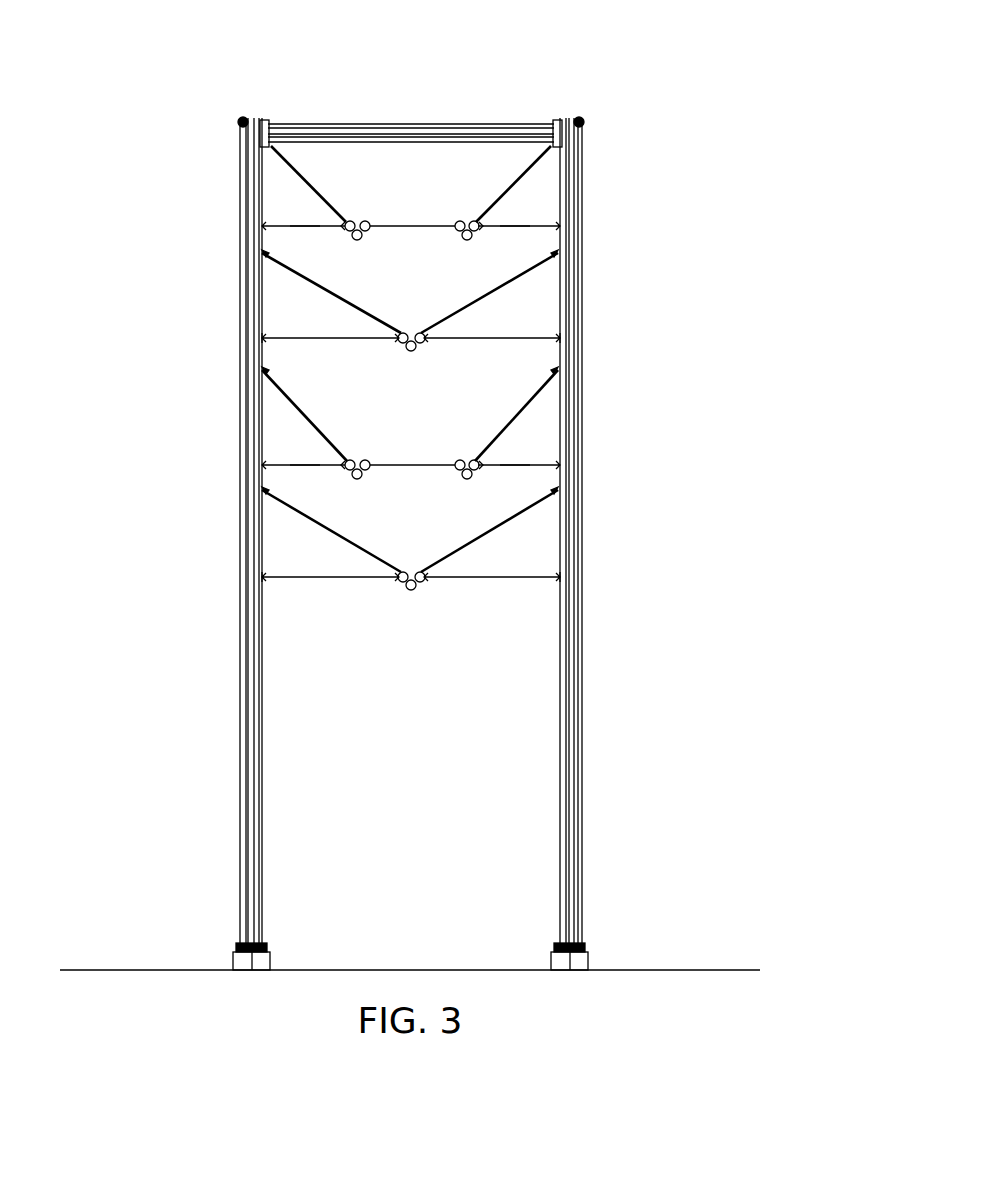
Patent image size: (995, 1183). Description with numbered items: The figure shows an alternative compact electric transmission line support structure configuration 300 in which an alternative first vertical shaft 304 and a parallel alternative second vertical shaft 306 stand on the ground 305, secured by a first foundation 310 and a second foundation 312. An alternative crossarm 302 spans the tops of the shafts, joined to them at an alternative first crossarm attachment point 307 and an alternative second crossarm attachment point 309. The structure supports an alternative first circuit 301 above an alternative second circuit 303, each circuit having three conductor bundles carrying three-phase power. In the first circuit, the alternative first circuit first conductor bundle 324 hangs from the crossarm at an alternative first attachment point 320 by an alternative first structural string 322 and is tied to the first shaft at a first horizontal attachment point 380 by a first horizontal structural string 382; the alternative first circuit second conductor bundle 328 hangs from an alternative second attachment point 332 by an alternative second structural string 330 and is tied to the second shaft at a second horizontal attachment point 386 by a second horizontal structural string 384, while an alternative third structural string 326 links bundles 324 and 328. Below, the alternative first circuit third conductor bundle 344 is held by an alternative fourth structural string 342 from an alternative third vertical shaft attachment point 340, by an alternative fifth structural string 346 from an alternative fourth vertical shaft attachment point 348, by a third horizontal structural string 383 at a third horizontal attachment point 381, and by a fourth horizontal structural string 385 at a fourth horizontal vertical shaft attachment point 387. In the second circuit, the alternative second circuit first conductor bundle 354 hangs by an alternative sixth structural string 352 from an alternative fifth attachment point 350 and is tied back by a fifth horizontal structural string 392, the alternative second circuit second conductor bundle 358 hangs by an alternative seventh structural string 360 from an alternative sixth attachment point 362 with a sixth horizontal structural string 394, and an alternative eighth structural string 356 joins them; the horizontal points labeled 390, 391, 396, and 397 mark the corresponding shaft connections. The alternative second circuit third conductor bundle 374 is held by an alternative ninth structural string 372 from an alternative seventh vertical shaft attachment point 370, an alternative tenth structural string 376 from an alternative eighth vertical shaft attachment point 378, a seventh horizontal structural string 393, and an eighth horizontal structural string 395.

The alternative compact electric transmission line support structure configuration 300 is at (128, 90).
The alternative first circuit 301 is at (642, 137).
The alternative crossarm 302 is at (412, 124).
The alternative second circuit 303 is at (642, 370).
The alternative first vertical shaft 304 is at (240, 810).
The ground 305 is at (410, 970).
The alternative second vertical shaft 306 is at (582, 810).
The alternative first crossarm attachment point 307 is at (238, 122).
The alternative second crossarm attachment point 309 is at (584, 122).
The first foundation 310 is at (235, 958).
The second foundation 312 is at (588, 958).
The alternative first attachment point 320 is at (273, 146).
The alternative first structural string 322 is at (308, 182).
The alternative first circuit first conductor bundle 324 is at (356, 222).
The alternative third structural string 326 is at (412, 226).
The alternative first circuit second conductor bundle 328 is at (475, 222).
The alternative second structural string 330 is at (512, 182).
The alternative second attachment point 332 is at (549, 146).
The alternative third vertical shaft attachment point 340 is at (264, 253).
The alternative fourth structural string 342 is at (345, 301).
The alternative first circuit third conductor bundle 344 is at (411, 332).
The alternative fifth structural string 346 is at (476, 301).
The alternative fourth vertical shaft attachment point 348 is at (556, 253).
The alternative fifth attachment point 350 is at (264, 370).
The alternative sixth structural string 352 is at (301, 410).
The alternative second circuit first conductor bundle 354 is at (356, 461).
The alternative eighth structural string 356 is at (412, 465).
The alternative second circuit second conductor bundle 358 is at (475, 461).
The alternative seventh structural string 360 is at (520, 410).
The alternative sixth attachment point 362 is at (556, 370).
The alternative seventh vertical shaft attachment point 370 is at (264, 490).
The alternative ninth structural string 372 is at (345, 539).
The alternative second circuit third conductor bundle 374 is at (411, 572).
The alternative tenth structural string 376 is at (476, 539).
The alternative eighth vertical shaft attachment point 378 is at (556, 490).
The first horizontal attachment point 380 is at (268, 226).
The third horizontal attachment point 381 is at (266, 338).
The first horizontal structural string 382 is at (297, 226).
The third horizontal structural string 383 is at (297, 338).
The second horizontal structural string 384 is at (527, 226).
The fourth horizontal structural string 385 is at (523, 338).
The second horizontal attachment point 386 is at (552, 226).
The fourth horizontal vertical shaft attachment point 387 is at (554, 338).
The horizontal cross member 390 is at (268, 465).
The cross member end 391 is at (266, 577).
The fifth horizontal structural string 392 is at (297, 465).
The seventh horizontal structural string 393 is at (297, 577).
The sixth horizontal structural string 394 is at (527, 465).
The eighth horizontal structural string 395 is at (523, 577).
The horizontal cross member 396 is at (552, 465).
The cross member end 397 is at (554, 577).